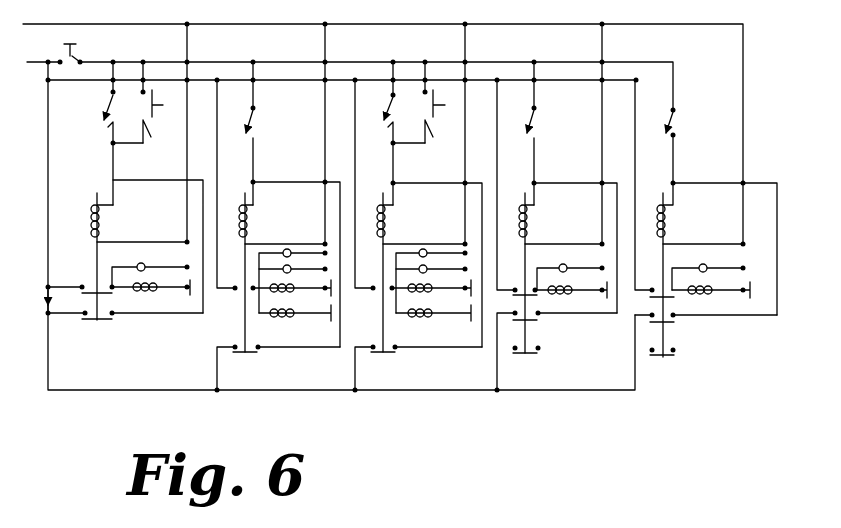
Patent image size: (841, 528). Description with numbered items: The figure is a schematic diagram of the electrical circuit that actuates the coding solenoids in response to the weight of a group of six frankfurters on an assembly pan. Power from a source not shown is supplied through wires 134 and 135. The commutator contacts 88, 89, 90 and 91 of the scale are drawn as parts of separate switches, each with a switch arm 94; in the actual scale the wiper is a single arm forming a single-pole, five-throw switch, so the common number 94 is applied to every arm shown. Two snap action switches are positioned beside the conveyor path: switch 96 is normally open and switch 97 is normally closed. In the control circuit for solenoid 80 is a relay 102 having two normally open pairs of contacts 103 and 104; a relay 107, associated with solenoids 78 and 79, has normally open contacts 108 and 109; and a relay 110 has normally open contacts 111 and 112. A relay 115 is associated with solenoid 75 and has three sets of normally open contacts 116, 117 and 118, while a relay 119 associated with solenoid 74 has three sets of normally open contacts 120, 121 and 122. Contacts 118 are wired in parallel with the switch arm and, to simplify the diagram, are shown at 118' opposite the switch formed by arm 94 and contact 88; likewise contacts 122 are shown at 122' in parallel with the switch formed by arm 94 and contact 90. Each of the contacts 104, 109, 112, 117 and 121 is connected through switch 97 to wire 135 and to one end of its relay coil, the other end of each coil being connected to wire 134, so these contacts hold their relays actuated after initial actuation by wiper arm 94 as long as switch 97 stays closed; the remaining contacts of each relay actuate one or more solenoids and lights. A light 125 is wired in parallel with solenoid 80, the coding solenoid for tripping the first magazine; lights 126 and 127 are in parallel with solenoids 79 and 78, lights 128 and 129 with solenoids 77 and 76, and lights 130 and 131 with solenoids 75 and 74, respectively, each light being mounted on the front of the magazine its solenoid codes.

The wire 134 is at (63, 24).
The wire 135 is at (38, 62).
The snap action switch 96 is at (78, 58).
The switch arm 94 is at (110, 100).
The commutator contact 88 is at (108, 126).
The contacts 118' is at (167, 102).
The relay 102 is at (104, 222).
The light 125 is at (137, 265).
The solenoid 80 is at (157, 290).
The contacts 103 is at (83, 275).
The snap action switch 97 is at (47, 298).
The contacts 104 is at (113, 313).
The contacts 108 is at (235, 289).
The commutator contact 89 is at (255, 138).
The relay 107 is at (250, 222).
The light 126 is at (284, 250).
The light 127 is at (292, 266).
The solenoid 79 is at (282, 290).
The solenoid 78 is at (278, 314).
The contacts 109 is at (259, 348).
The contacts 111 is at (374, 290).
The commutator contact 90 is at (421, 234).
The contacts 122' is at (448, 104).
The relay 110 is at (388, 222).
The light 128 is at (420, 250).
The light 129 is at (428, 266).
The solenoid 77 is at (420, 291).
The solenoid 76 is at (416, 314).
The contacts 112 is at (397, 348).
The contacts 116 is at (520, 292).
The commutator contact 91 is at (536, 138).
The relay 115 is at (535, 222).
The light 130 is at (562, 265).
The solenoid 75 is at (565, 292).
The contacts 117 is at (542, 298).
The contacts 118 is at (554, 347).
The contacts 120 is at (652, 289).
The relay 119 is at (675, 222).
The light 131 is at (698, 265).
The solenoid 74 is at (700, 292).
The contacts 121 is at (652, 315).
The contacts 122 is at (691, 351).